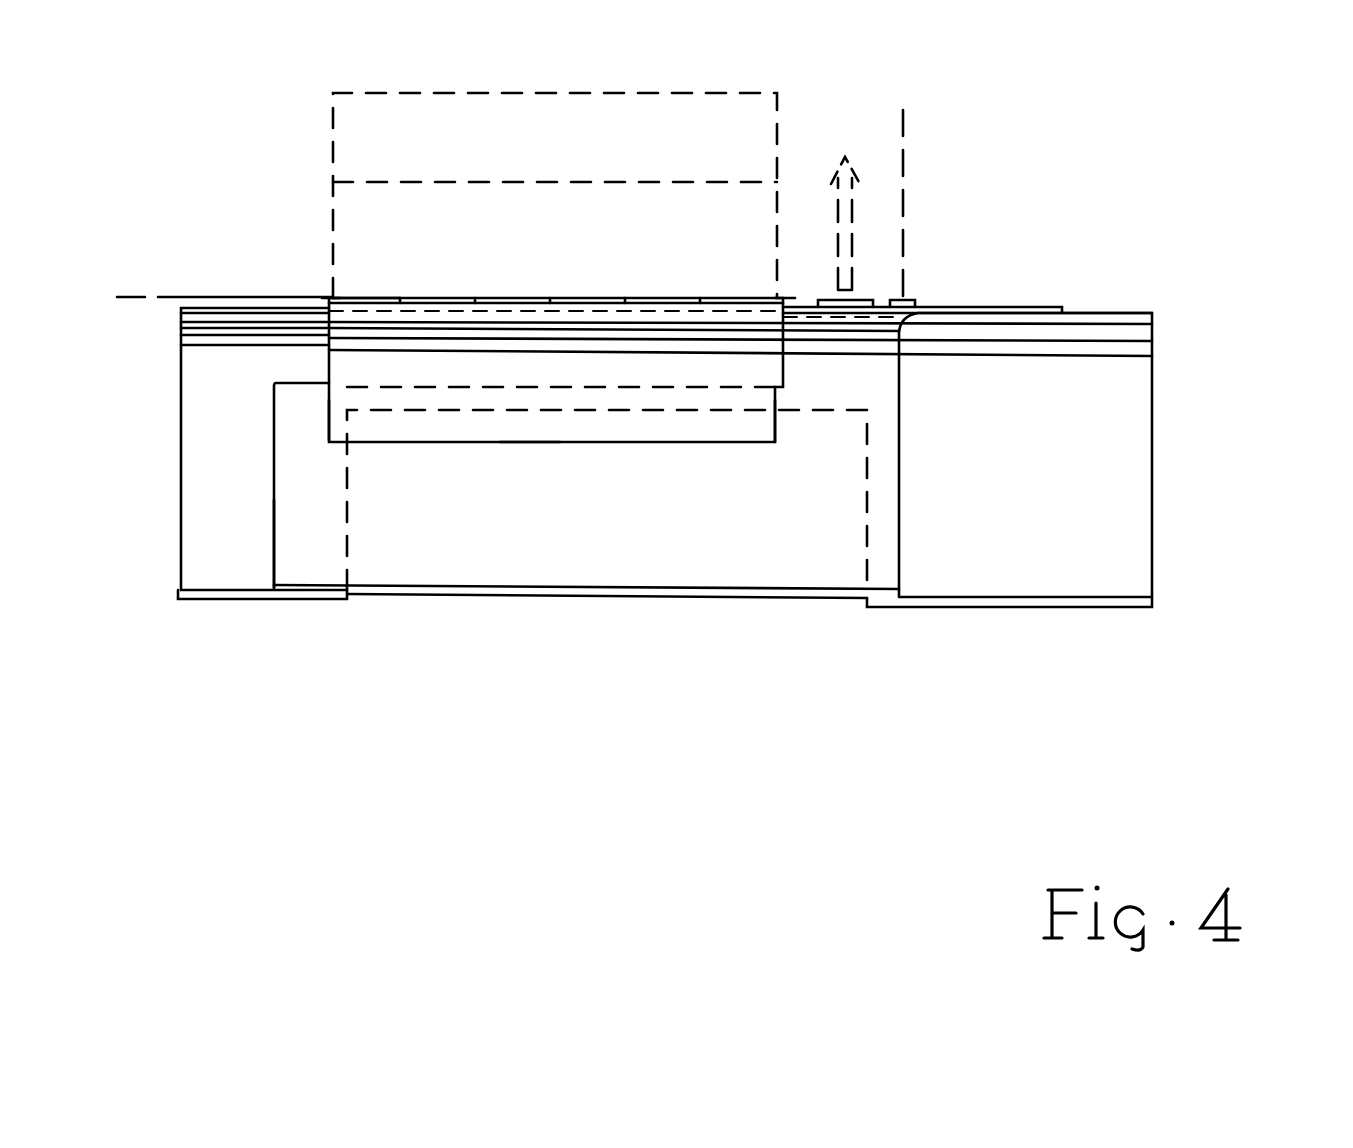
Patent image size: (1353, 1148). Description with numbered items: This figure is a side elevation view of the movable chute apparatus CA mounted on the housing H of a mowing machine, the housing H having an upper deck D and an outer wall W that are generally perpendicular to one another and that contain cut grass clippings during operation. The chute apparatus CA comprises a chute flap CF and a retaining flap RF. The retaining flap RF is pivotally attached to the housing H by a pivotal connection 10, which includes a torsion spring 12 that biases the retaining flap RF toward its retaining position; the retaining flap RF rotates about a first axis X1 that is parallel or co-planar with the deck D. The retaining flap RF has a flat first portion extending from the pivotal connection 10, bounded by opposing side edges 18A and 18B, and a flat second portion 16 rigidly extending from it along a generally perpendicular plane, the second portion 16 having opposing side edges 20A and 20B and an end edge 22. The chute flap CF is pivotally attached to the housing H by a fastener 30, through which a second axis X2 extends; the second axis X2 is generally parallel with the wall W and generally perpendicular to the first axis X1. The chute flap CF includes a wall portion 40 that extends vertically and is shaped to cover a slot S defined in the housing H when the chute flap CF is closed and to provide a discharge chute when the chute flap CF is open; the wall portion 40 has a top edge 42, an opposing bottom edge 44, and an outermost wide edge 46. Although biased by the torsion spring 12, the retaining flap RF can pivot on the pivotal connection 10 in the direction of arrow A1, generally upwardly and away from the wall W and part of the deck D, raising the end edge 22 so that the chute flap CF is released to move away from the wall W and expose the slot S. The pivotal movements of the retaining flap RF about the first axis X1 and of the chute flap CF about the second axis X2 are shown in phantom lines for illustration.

The pivotal connection 10 is at (345, 297).
The torsion spring 12 is at (555, 195).
The second portion 16 is at (519, 385).
The side edge 18A is at (783, 300).
The side edge 18B is at (327, 298).
The side edge 20A is at (777, 423).
The side edge 20B is at (330, 418).
The end edge 22 is at (530, 442).
The fastener 30 is at (912, 300).
The wall portion 40 is at (618, 538).
The top edge 42 is at (305, 383).
The bottom edge 44 is at (672, 590).
The outermost wide edge 46 is at (274, 532).
The upper deck D is at (238, 298).
The housing H is at (181, 401).
The outer wall W is at (1022, 458).
The slot S is at (347, 525).
The chute flap CF is at (776, 553).
The retaining flap RF is at (777, 400).
The chute apparatus CA is at (1170, 247).
The first axis X1 is at (200, 297).
The second axis X2 is at (903, 180).
The arrow A1 is at (853, 232).